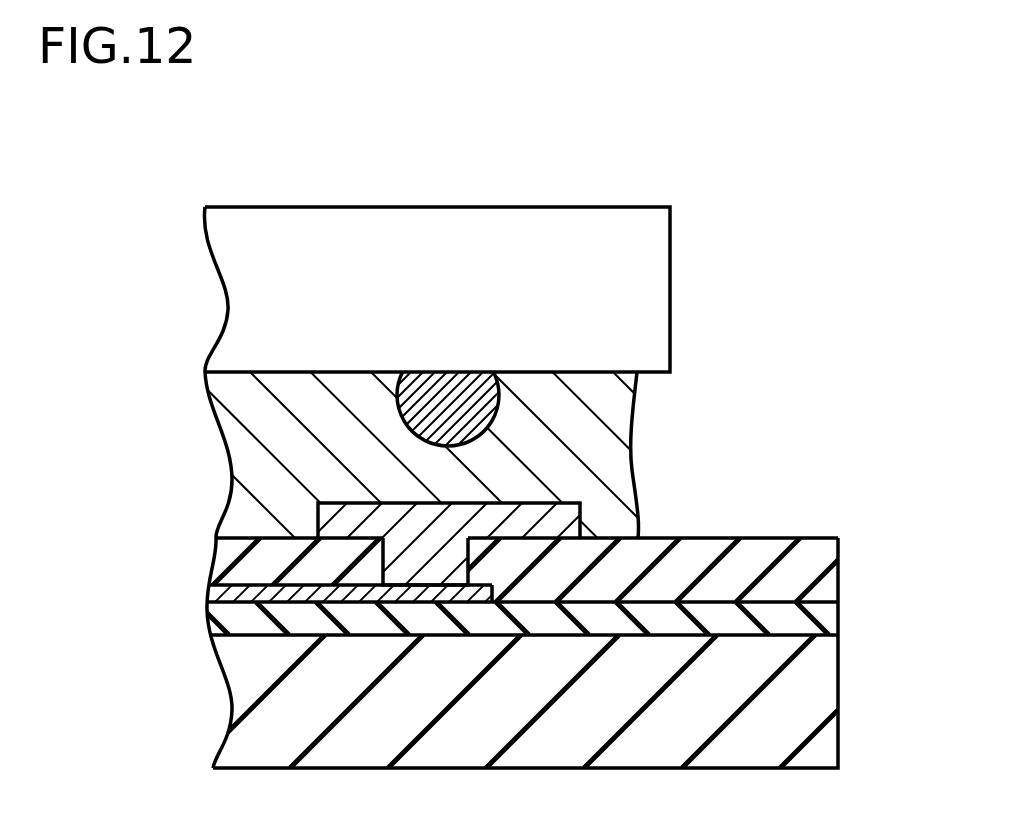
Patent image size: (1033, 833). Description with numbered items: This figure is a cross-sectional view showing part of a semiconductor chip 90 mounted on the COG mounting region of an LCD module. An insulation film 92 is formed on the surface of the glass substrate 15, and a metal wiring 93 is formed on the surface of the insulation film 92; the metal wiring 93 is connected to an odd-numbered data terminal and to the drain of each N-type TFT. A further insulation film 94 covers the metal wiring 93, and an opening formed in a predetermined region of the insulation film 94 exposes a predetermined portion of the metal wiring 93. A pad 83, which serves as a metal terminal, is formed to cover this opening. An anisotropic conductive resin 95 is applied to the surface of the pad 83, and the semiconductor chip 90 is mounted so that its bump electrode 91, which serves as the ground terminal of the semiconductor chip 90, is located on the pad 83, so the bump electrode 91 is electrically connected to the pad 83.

The glass substrate 15 is at (803, 683).
The pad 83 is at (553, 521).
The semiconductor chip 90 is at (572, 237).
The bump electrode 91 is at (500, 397).
The insulation film 92 is at (803, 608).
The metal wiring 93 is at (257, 600).
The insulation film 94 is at (272, 558).
The anisotropic conductive resin 95 is at (580, 455).